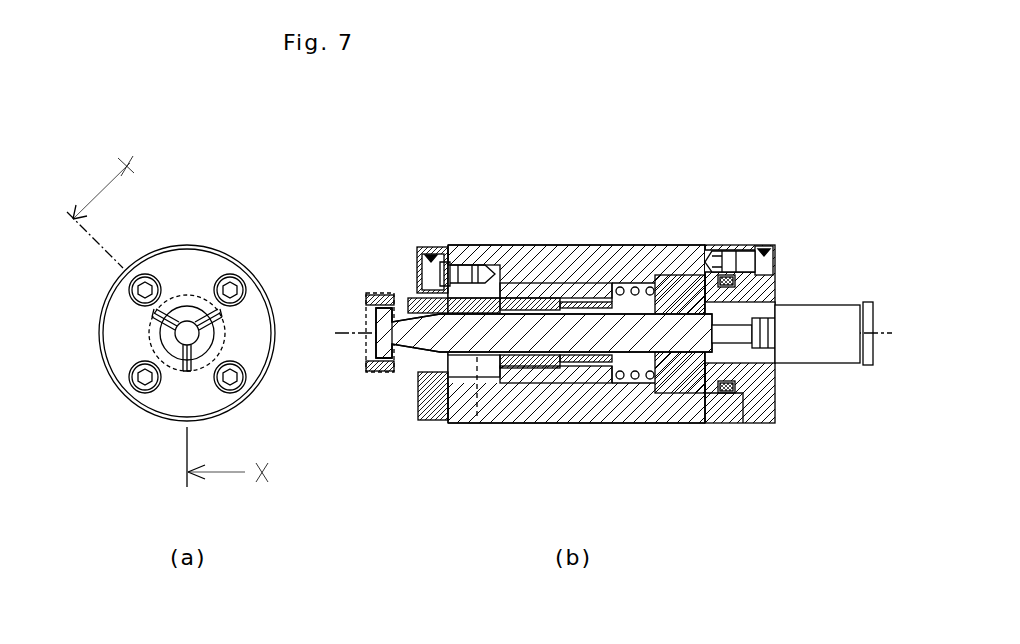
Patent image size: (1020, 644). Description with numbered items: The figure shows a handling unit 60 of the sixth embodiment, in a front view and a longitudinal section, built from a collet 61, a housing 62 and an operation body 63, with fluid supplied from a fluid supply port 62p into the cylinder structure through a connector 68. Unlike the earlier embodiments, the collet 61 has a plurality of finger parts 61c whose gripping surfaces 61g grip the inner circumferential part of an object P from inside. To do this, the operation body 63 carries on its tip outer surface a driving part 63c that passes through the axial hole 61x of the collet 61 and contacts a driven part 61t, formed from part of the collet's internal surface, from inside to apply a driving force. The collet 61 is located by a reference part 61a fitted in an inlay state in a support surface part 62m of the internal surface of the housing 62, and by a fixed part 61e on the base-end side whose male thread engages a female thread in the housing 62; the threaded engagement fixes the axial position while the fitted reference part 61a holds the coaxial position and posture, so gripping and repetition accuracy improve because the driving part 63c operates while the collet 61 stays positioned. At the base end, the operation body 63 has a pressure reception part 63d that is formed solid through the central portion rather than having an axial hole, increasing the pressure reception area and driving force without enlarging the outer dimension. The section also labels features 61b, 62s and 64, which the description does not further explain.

The handling unit 60 is at (473, 115).
The collet 61 is at (503, 298).
The reference part 61a is at (535, 298).
The engaging screw 61b is at (450, 290).
The finger parts 61c is at (186, 300).
The fixed part 61e is at (588, 364).
The gripping surfaces 61g is at (386, 360).
The driven part 61t is at (412, 312).
The axial hole 61x is at (477, 420).
The housing 62 is at (537, 423).
The support surface part 62m is at (515, 368).
The fluid supply port 62p is at (776, 395).
The housing partition 62s is at (706, 392).
The operation body 63 is at (605, 300).
The driving part 63c is at (412, 362).
The pressure reception part 63d is at (710, 306).
The piston 64 is at (657, 278).
The connector 68 is at (828, 305).
The object to be gripped P is at (380, 300).